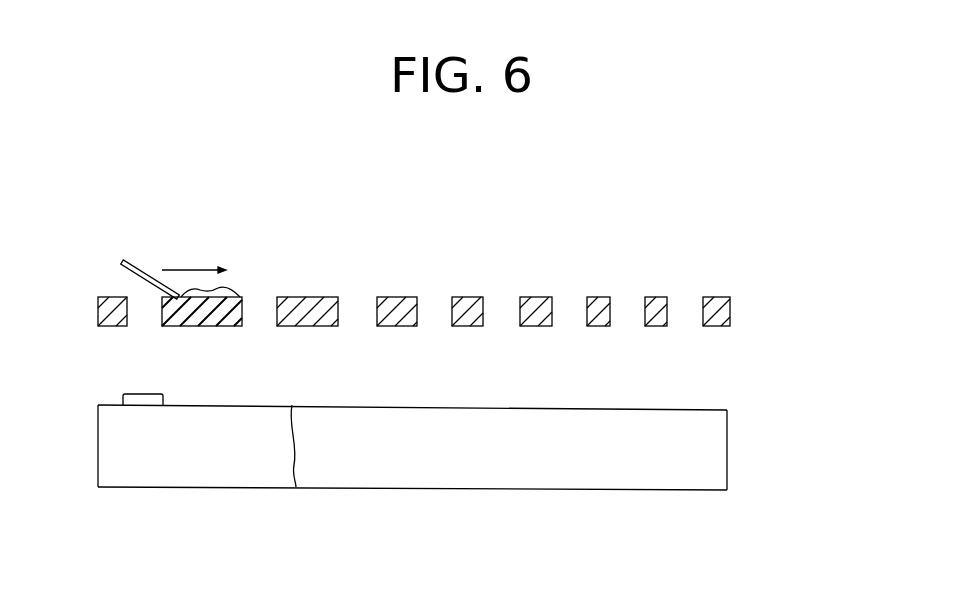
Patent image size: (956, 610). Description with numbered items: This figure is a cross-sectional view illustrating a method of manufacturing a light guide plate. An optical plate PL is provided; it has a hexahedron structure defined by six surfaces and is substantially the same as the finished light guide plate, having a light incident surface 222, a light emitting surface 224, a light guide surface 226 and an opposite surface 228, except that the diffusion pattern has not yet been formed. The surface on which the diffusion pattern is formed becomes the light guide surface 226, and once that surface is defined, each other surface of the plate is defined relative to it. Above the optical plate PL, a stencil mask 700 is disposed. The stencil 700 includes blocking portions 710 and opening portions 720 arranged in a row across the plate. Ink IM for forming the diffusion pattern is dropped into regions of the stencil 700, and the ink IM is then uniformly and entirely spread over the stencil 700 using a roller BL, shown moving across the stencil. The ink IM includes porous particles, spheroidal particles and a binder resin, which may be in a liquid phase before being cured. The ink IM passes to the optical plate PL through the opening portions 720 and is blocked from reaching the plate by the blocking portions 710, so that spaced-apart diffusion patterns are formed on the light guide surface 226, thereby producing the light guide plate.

The stencil mask 700 is at (752, 300).
The blocking portion 710 is at (486, 310).
The opening portion 720 is at (569, 312).
The roller BL is at (140, 262).
The ink IM is at (232, 293).
The optical plate PL is at (752, 402).
The light incident surface 222 is at (97, 452).
The light emitting surface 224 is at (220, 487).
The light guide surface 226 is at (296, 487).
The opposite surface 228 is at (727, 460).